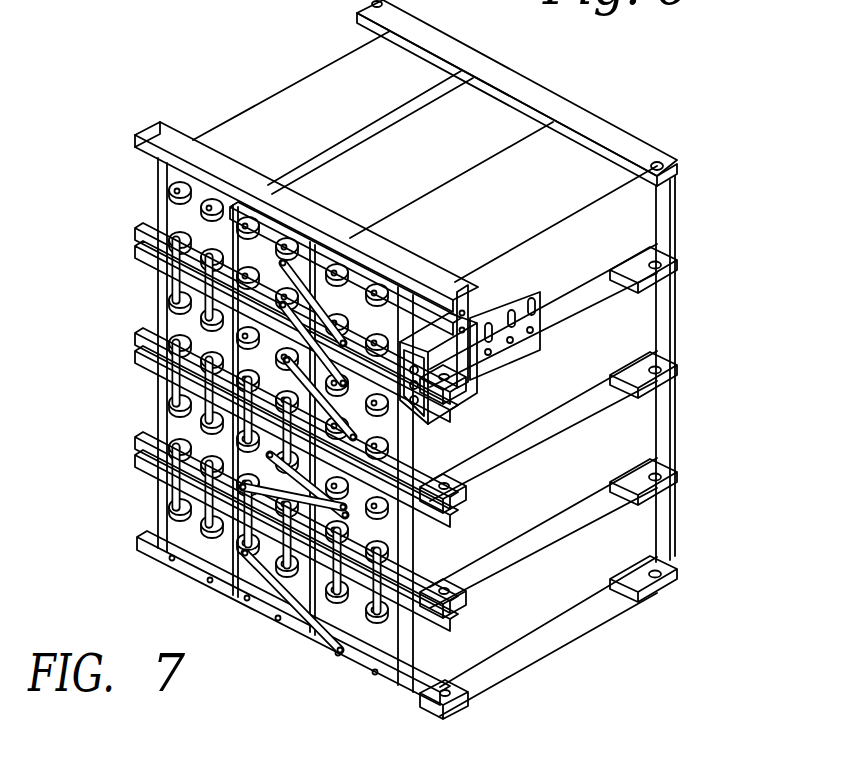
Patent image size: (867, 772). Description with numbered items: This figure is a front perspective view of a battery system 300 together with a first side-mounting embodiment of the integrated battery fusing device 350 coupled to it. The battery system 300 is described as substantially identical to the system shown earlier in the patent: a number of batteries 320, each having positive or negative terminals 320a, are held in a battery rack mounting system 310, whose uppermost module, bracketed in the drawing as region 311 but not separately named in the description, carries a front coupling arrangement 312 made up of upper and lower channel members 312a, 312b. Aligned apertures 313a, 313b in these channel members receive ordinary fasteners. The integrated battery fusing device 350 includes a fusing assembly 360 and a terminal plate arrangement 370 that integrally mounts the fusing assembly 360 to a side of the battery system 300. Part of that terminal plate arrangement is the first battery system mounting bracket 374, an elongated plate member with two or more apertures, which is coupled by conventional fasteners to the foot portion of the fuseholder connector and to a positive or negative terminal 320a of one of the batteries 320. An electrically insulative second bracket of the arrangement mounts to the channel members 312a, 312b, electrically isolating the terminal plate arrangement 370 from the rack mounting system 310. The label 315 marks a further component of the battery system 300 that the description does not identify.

The battery system 300 is at (305, 72).
The battery rack mounting system 310 is at (558, 281).
The frame post 311 is at (683, 157).
The spacer assembly 312 is at (548, 487).
The upper channel member 312a is at (455, 617).
The lower channel member 312b is at (453, 706).
The aperture 313a is at (423, 632).
The aperture 313b is at (422, 706).
The battery cell 315 is at (612, 540).
The battery 320 is at (183, 432).
The positive or negative terminal 320a is at (340, 298).
The integrated battery fusing device 350 is at (462, 430).
The fusing assembly 360 is at (478, 384).
The terminal plate arrangement 370 is at (497, 318).
The first battery system mounting bracket 374 is at (357, 296).